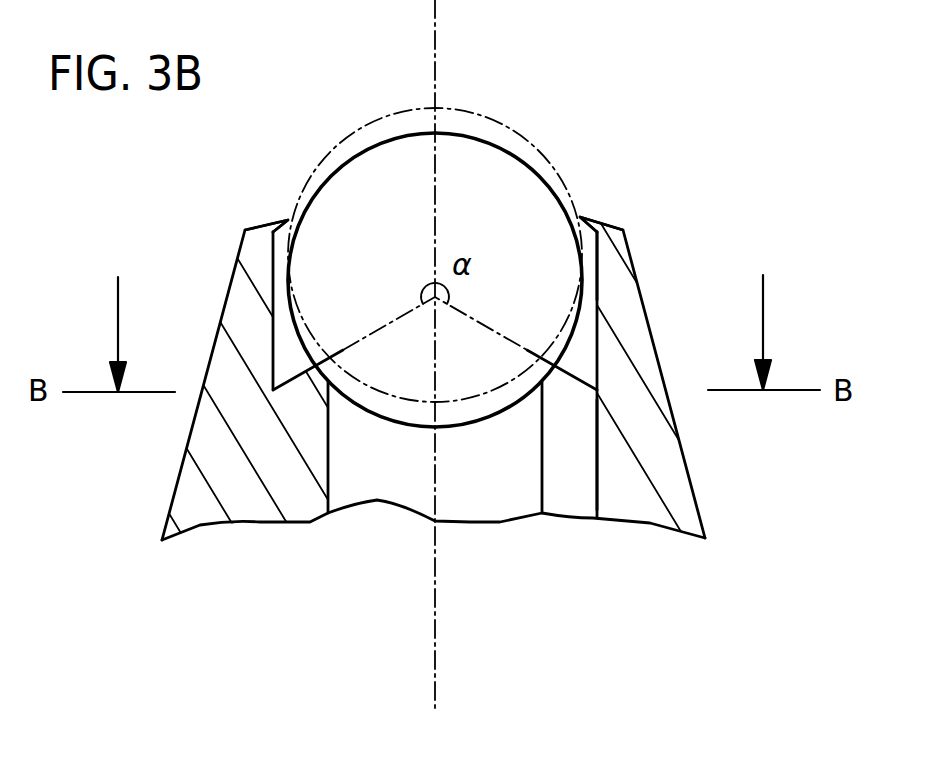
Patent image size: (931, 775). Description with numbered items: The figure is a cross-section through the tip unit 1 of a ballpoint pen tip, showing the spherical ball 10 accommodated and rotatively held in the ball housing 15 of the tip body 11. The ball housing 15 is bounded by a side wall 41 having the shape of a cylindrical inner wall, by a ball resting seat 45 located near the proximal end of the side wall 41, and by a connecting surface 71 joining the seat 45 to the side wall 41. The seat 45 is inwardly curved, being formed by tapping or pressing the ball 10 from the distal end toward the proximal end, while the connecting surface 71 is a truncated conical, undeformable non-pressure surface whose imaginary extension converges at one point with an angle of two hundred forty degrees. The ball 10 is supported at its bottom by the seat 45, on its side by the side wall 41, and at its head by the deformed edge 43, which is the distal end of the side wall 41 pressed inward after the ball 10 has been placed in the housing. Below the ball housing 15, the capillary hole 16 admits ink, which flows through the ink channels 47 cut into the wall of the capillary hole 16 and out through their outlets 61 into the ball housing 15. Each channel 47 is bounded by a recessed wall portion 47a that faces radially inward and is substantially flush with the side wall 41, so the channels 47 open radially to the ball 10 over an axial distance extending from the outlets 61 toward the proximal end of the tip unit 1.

The tip unit 1 is at (607, 118).
The ball 10 is at (473, 167).
The tip body 11 is at (623, 317).
The ball housing 15 is at (590, 287).
The capillary hole 16 is at (388, 503).
The side wall 41 is at (273, 277).
The deformed edge 43 is at (583, 217).
The ball resting seat 45 is at (540, 373).
The ink channels 47 is at (570, 497).
The recessed wall portion 47a is at (588, 453).
The outlets 61 is at (593, 368).
The connecting surface 71 is at (292, 380).